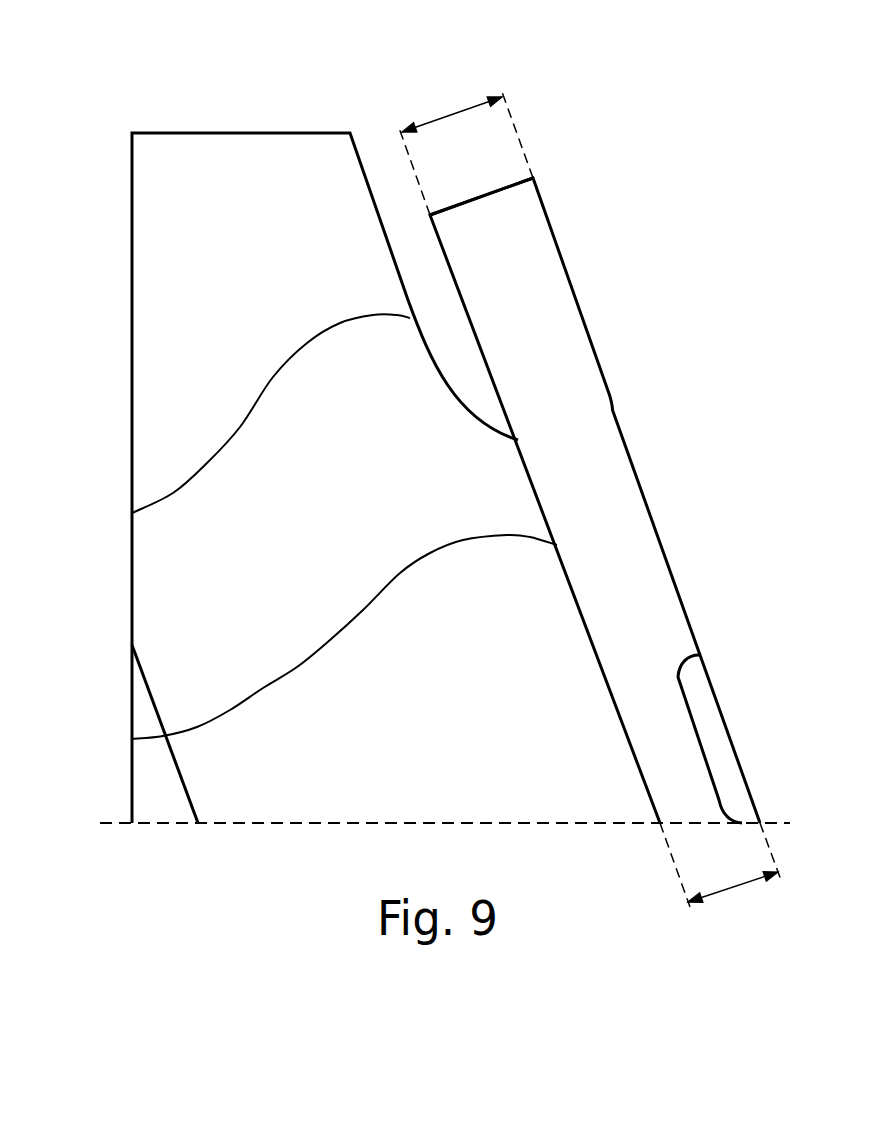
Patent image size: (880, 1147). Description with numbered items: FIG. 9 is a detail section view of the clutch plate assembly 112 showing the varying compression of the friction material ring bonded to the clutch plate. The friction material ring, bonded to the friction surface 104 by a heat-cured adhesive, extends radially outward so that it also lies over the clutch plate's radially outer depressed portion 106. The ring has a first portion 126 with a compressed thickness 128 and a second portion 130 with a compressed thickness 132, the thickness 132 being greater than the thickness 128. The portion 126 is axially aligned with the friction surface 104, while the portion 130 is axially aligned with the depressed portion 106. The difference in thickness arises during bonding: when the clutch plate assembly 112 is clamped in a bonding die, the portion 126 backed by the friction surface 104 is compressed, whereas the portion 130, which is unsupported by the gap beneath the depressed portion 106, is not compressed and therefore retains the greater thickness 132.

The friction surface 104 is at (132, 739).
The radially outer depressed portion 106 is at (132, 513).
The clutch plate assembly 112 is at (608, 500).
The portion 126 is at (672, 623).
The compressed thickness 128 is at (727, 888).
The portion 130 is at (582, 368).
The compressed thickness 132 is at (458, 113).